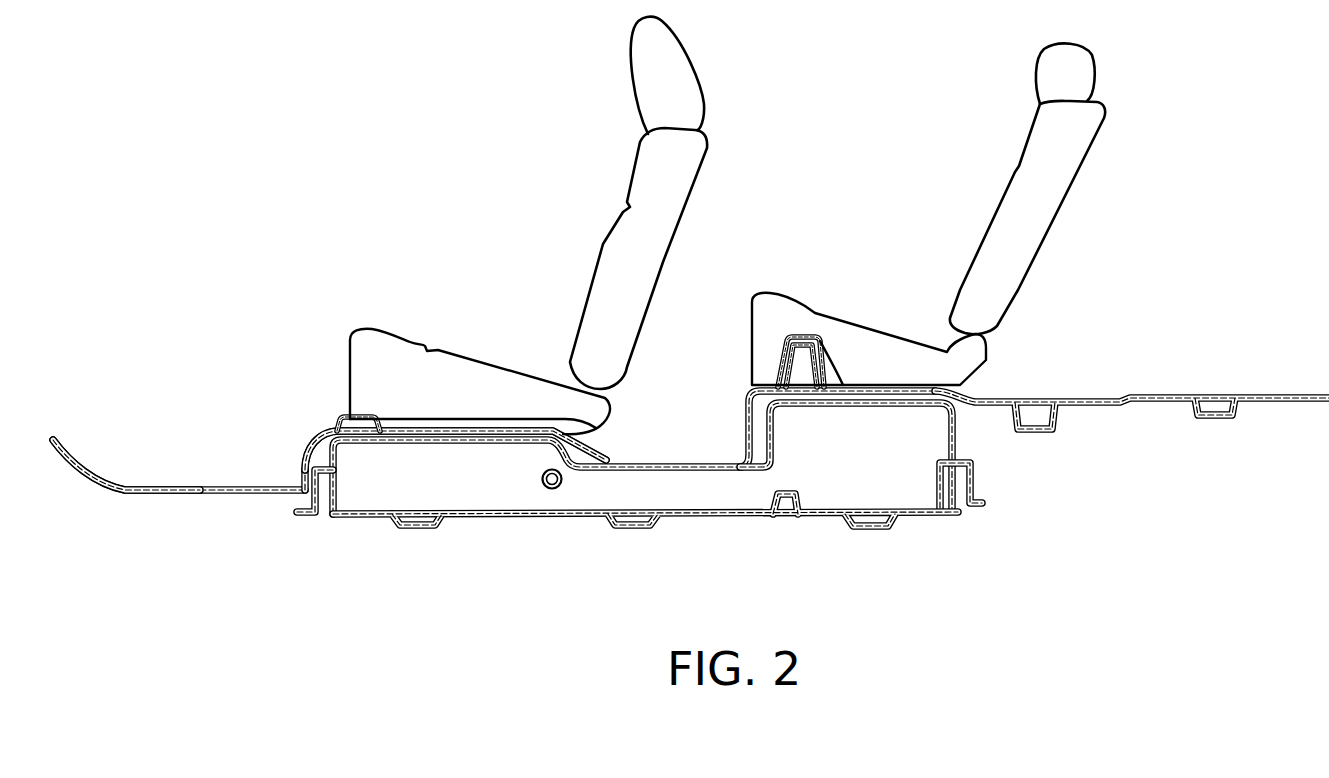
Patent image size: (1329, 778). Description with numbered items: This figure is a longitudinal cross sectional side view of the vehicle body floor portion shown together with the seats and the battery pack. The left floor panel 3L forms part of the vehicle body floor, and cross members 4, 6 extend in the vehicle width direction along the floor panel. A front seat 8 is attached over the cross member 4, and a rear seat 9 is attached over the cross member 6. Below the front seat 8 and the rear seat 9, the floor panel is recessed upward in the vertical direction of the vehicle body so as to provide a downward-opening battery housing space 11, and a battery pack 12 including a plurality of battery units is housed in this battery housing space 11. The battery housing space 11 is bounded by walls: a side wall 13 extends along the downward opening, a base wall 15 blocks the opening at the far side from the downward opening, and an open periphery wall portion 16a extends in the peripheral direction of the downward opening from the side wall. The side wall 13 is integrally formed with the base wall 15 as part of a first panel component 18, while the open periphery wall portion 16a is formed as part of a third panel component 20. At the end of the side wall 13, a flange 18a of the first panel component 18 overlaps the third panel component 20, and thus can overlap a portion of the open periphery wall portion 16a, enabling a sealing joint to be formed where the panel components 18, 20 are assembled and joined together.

The left floor panel 3L is at (163, 482).
The cross member 4 is at (340, 418).
The cross member 6 is at (817, 357).
The front seat 8 is at (706, 163).
The rear seat 9 is at (1082, 158).
The battery housing space 11 is at (323, 457).
The battery pack 12 is at (536, 516).
The side wall 13 is at (302, 465).
The base wall 15 is at (462, 428).
The open periphery wall portion 16a is at (240, 497).
The first panel component 18 is at (314, 430).
The flange 18a is at (299, 486).
The third panel component 20 is at (178, 500).